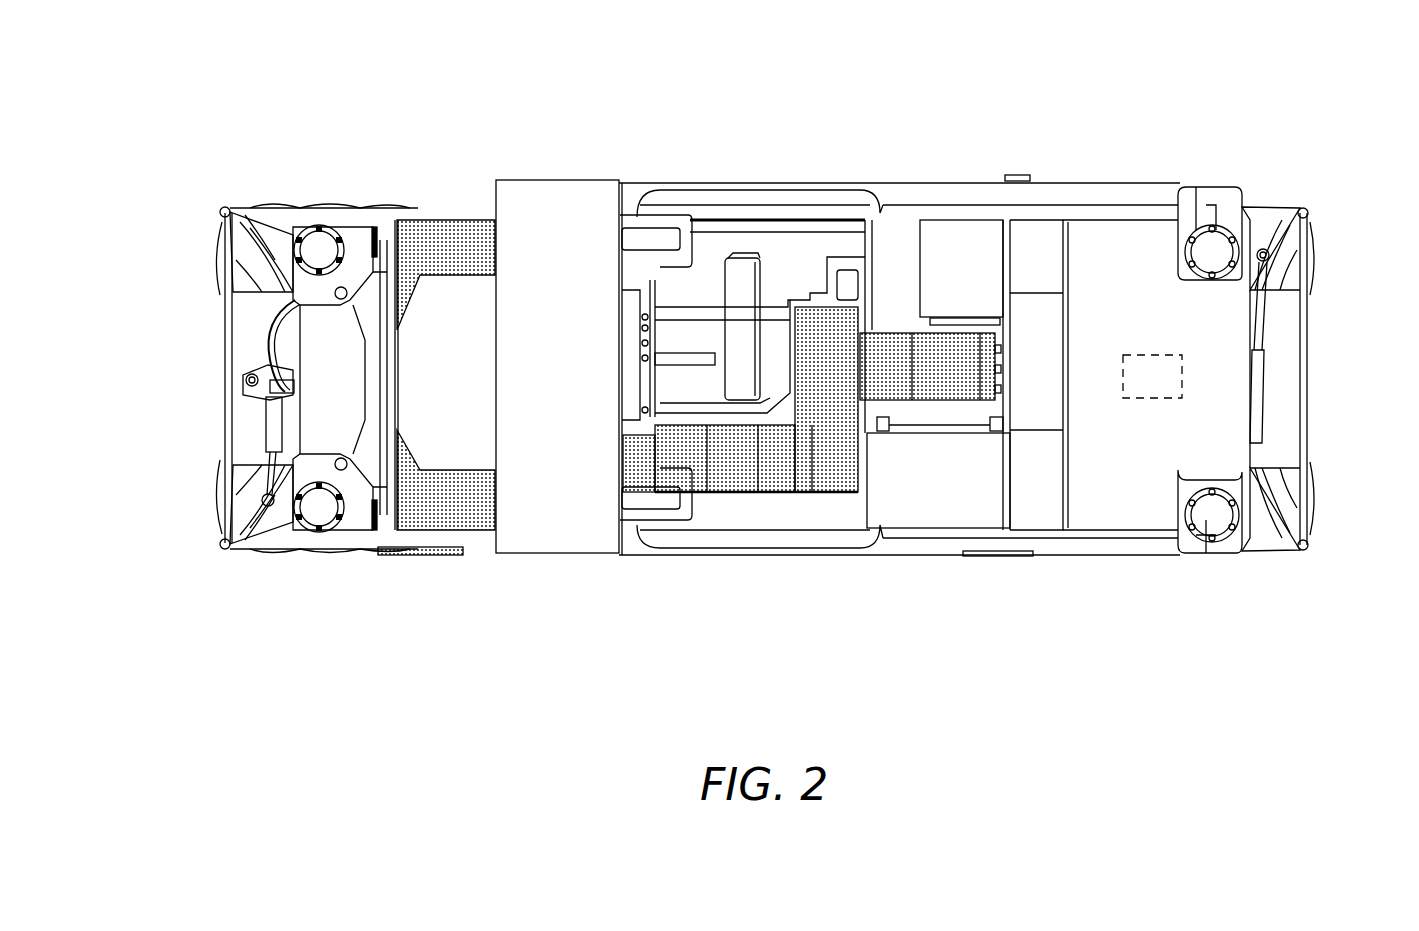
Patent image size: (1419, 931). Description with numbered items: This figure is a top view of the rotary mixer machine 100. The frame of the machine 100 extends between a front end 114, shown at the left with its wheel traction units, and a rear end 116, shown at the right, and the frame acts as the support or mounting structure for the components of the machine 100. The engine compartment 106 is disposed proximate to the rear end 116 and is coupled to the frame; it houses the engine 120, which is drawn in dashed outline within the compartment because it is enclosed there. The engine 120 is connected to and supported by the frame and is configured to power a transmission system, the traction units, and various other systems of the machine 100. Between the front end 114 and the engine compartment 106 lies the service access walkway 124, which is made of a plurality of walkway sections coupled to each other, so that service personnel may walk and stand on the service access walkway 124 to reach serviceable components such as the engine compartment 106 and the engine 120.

The machine 100 is at (1270, 118).
The engine compartment 106 is at (1140, 505).
The front end 114 is at (190, 412).
The rear end 116 is at (1320, 360).
The engine 120 is at (1152, 376).
The service access walkway 124 is at (838, 480).